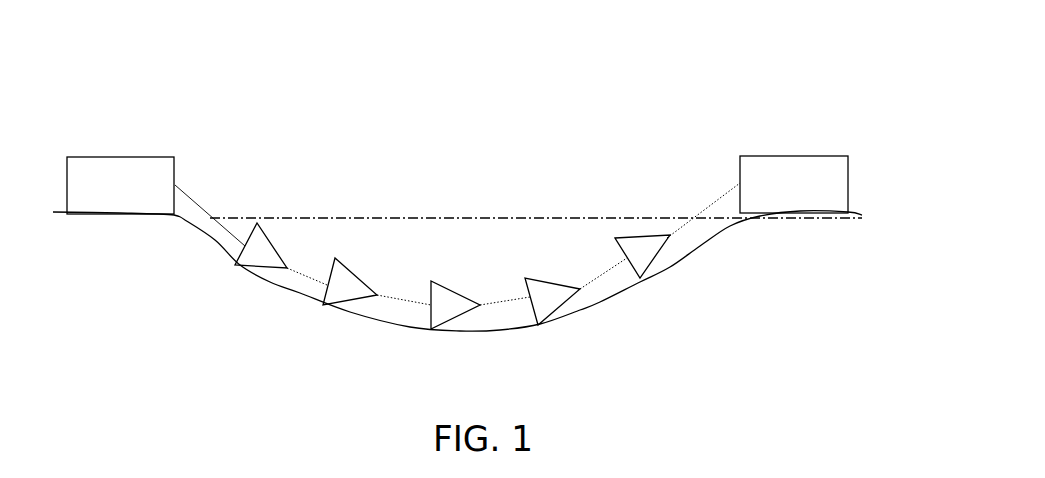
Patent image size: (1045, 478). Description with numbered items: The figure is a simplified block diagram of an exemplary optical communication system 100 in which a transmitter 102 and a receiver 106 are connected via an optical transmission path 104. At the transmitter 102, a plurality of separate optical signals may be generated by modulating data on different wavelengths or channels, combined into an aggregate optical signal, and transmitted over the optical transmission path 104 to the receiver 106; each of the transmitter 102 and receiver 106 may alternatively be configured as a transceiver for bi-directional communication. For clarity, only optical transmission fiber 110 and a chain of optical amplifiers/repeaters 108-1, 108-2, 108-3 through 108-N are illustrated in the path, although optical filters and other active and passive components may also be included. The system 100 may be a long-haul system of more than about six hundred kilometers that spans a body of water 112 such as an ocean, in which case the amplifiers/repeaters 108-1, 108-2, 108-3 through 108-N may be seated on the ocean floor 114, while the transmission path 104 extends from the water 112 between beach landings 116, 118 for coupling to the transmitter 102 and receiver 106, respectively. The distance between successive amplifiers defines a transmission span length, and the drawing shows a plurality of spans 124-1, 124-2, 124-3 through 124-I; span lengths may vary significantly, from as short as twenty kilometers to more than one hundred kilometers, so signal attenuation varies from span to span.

The optical communication system 100 is at (483, 70).
The transmitter 102 is at (120, 157).
The optical transmission path 104 is at (452, 250).
The receiver 106 is at (794, 156).
The optical amplifier/repeater 108-1 is at (260, 268).
The optical amplifier/repeater 108-2 is at (350, 301).
The optical amplifier/repeater 108-3 is at (457, 316).
The optical amplifier/repeater 108-N is at (655, 257).
The optical transmission fiber 110 is at (310, 277).
The body of water 112 is at (347, 210).
The ocean floor 114 is at (515, 332).
The beach landing 116 is at (181, 226).
The beach landing 118 is at (750, 230).
The span 124-1 is at (210, 217).
The span 124-2 is at (297, 284).
The span 124-3 is at (402, 311).
The span 124-I is at (707, 212).